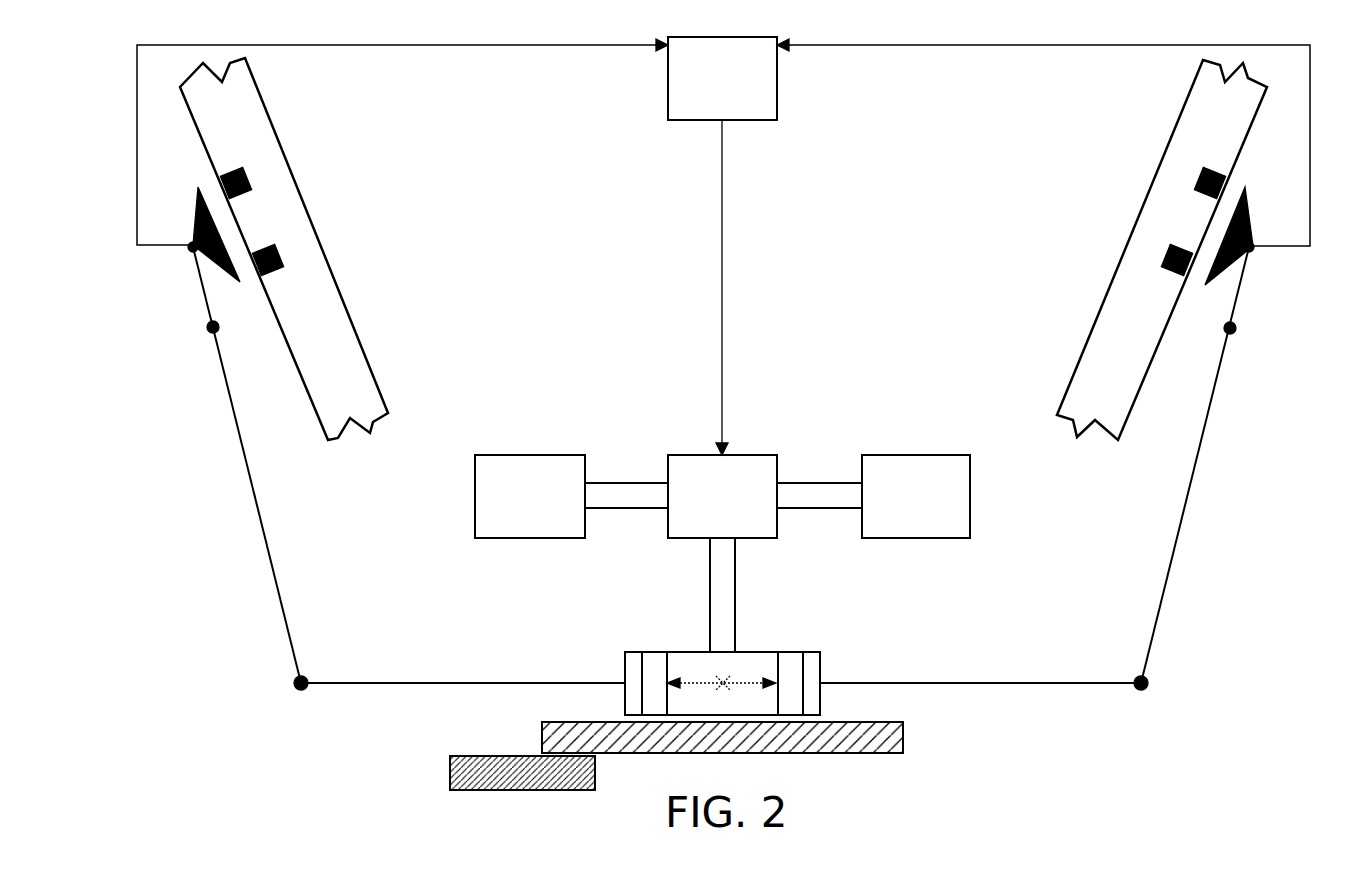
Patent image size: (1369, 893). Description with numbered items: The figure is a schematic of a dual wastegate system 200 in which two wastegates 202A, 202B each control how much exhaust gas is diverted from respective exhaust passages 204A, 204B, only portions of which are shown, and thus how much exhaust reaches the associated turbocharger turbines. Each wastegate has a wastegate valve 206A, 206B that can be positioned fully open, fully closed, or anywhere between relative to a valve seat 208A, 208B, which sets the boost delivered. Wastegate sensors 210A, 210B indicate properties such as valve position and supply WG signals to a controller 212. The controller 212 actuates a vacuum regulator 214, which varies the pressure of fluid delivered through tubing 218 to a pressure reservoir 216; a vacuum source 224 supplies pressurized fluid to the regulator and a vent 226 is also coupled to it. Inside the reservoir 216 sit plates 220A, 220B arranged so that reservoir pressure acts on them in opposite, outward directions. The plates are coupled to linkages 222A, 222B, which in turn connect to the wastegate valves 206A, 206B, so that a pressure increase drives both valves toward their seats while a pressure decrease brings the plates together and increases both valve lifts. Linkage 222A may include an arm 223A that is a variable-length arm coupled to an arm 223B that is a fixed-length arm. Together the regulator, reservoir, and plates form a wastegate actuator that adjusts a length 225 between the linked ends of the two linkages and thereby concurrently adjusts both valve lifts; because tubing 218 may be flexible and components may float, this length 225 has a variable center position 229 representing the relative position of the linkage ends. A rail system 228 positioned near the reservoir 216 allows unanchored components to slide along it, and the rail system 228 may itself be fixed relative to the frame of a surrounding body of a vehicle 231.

The dual wastegate system 200 is at (730, 414).
The wastegate 202A is at (1063, 239).
The wastegate 202B is at (389, 239).
The exhaust passage 204A is at (1117, 262).
The exhaust passage 204B is at (332, 263).
The wastegate valve 206A is at (1252, 214).
The wastegate valve 206B is at (195, 220).
The valve seat 208A is at (1182, 208).
The valve seat 208B is at (272, 205).
The wastegate sensor 210A is at (1252, 250).
The wastegate sensor 210B is at (193, 250).
The controller 212 is at (706, 88).
The vacuum regulator 214 is at (706, 507).
The pressure reservoir 216 is at (727, 696).
The tubing 218 is at (710, 608).
The plate 220A is at (792, 652).
The plate 220B is at (657, 652).
The linkage 222A is at (1144, 732).
The linkage 222B is at (299, 732).
The arm 223A is at (353, 683).
The arm 223B is at (240, 432).
The vacuum source 224 is at (514, 507).
The length 225 is at (757, 690).
The vent 226 is at (900, 507).
The rail system 228 is at (542, 750).
The center position 229 is at (720, 680).
The frame of a surrounding body of a vehicle 231 is at (450, 780).